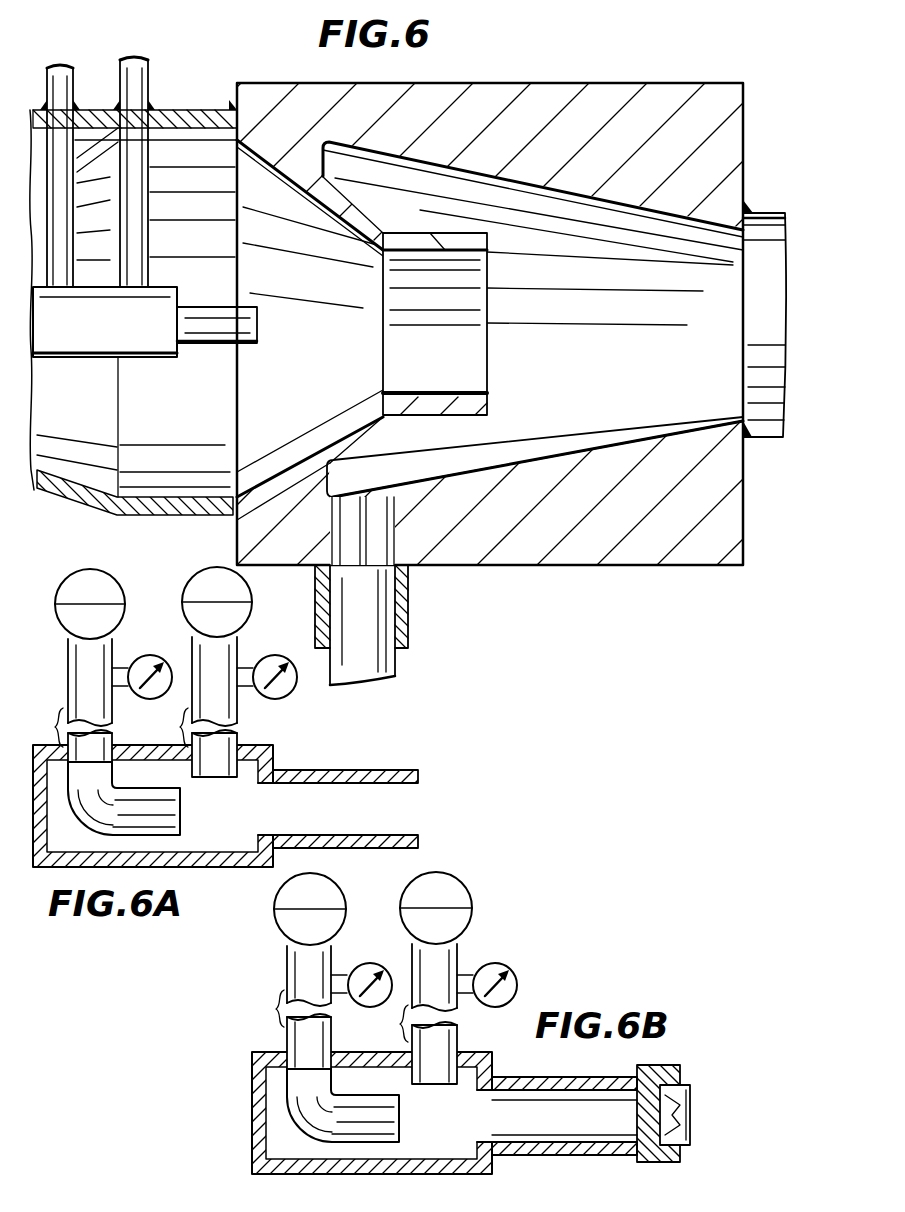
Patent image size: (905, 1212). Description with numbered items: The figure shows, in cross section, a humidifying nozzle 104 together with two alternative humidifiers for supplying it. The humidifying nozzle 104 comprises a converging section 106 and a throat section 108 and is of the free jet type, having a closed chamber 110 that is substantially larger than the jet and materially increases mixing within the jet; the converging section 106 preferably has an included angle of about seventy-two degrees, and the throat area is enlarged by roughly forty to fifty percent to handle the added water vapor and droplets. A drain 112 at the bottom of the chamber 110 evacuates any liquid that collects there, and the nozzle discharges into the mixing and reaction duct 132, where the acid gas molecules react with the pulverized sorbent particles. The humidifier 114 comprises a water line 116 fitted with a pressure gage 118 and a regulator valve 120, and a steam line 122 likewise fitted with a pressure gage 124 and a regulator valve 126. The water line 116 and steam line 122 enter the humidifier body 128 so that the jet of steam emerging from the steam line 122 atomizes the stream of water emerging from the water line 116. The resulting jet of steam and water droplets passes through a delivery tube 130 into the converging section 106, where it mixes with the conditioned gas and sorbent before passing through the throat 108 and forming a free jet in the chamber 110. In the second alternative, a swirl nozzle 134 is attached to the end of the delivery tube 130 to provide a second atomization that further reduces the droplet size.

In FIG. 6, the humidifying nozzle 104 is at (552, 70).
In FIG. 6, the converging section 106 is at (345, 424).
In FIG. 6, the throat section 108 is at (432, 397).
In FIG. 6, the closed chamber 110 is at (535, 462).
In FIG. 6, the drain 112 is at (410, 615).
In FIG. 6, the humidifier 114 is at (90, 362).
In FIG. 6, the water line 116 is at (147, 86).
In FIG. 6A, the water line 116 is at (237, 727).
In FIG. 6B, the water line 116 is at (452, 1040).
In FIG. 6A, the pressure gage 118 is at (286, 688).
In FIG. 6B, the pressure gage 118 is at (488, 966).
In FIG. 6A, the regulator valve 120 is at (250, 600).
In FIG. 6B, the regulator valve 120 is at (458, 892).
In FIG. 6, the steam line 122 is at (66, 89).
In FIG. 6A, the steam line 122 is at (113, 716).
In FIG. 6B, the steam line 122 is at (332, 1028).
In FIG. 6A, the pressure gage 124 is at (167, 641).
In FIG. 6B, the pressure gage 124 is at (384, 945).
In FIG. 6A, the regulator valve 126 is at (143, 588).
In FIG. 6B, the regulator valve 126 is at (336, 893).
In FIG. 6A, the humidifier body 128 is at (255, 868).
In FIG. 6B, the humidifier body 128 is at (491, 1163).
In FIG. 6, the delivery tube 130 is at (207, 345).
In FIG. 6A, the delivery tube 130 is at (380, 770).
In FIG. 6B, the delivery tube 130 is at (582, 1072).
In FIG. 6, the mixing and reaction duct 132 is at (765, 215).
In FIG. 6B, the swirl nozzle 134 is at (672, 1068).